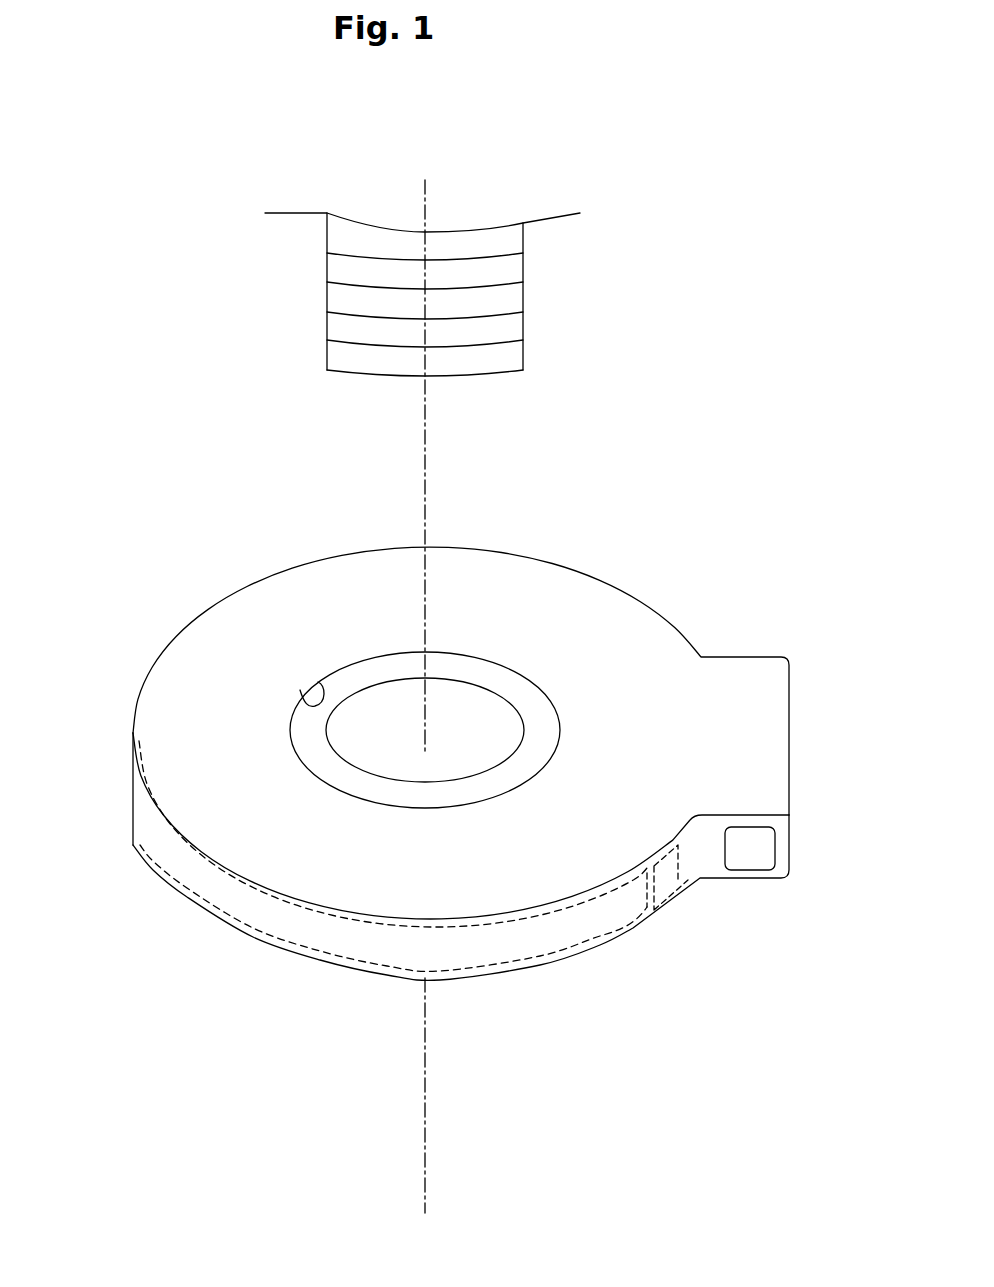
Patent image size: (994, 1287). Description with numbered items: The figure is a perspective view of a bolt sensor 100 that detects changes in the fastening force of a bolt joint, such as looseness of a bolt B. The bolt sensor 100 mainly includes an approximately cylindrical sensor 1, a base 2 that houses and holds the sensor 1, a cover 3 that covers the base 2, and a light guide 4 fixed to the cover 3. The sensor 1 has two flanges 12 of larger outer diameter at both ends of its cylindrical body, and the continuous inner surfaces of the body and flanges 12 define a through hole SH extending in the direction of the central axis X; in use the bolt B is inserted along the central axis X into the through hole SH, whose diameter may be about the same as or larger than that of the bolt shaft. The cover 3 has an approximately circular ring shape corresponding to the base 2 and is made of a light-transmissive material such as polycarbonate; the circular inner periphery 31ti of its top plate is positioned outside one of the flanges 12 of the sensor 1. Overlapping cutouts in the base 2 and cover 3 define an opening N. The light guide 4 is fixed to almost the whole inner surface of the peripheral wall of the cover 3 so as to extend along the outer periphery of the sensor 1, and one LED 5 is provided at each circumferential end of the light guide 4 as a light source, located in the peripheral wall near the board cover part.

The bolt sensor 100 is at (150, 432).
The sensor 1 is at (478, 644).
The flange 12 is at (365, 677).
The cover 3 is at (632, 633).
The base 2 is at (635, 932).
The light guide 4 is at (535, 940).
The LED 5 is at (703, 884).
The opening N is at (775, 848).
The through hole SH is at (470, 728).
The inner periphery 31ti is at (300, 690).
The bolt B is at (523, 293).
The central axis X is at (425, 1163).